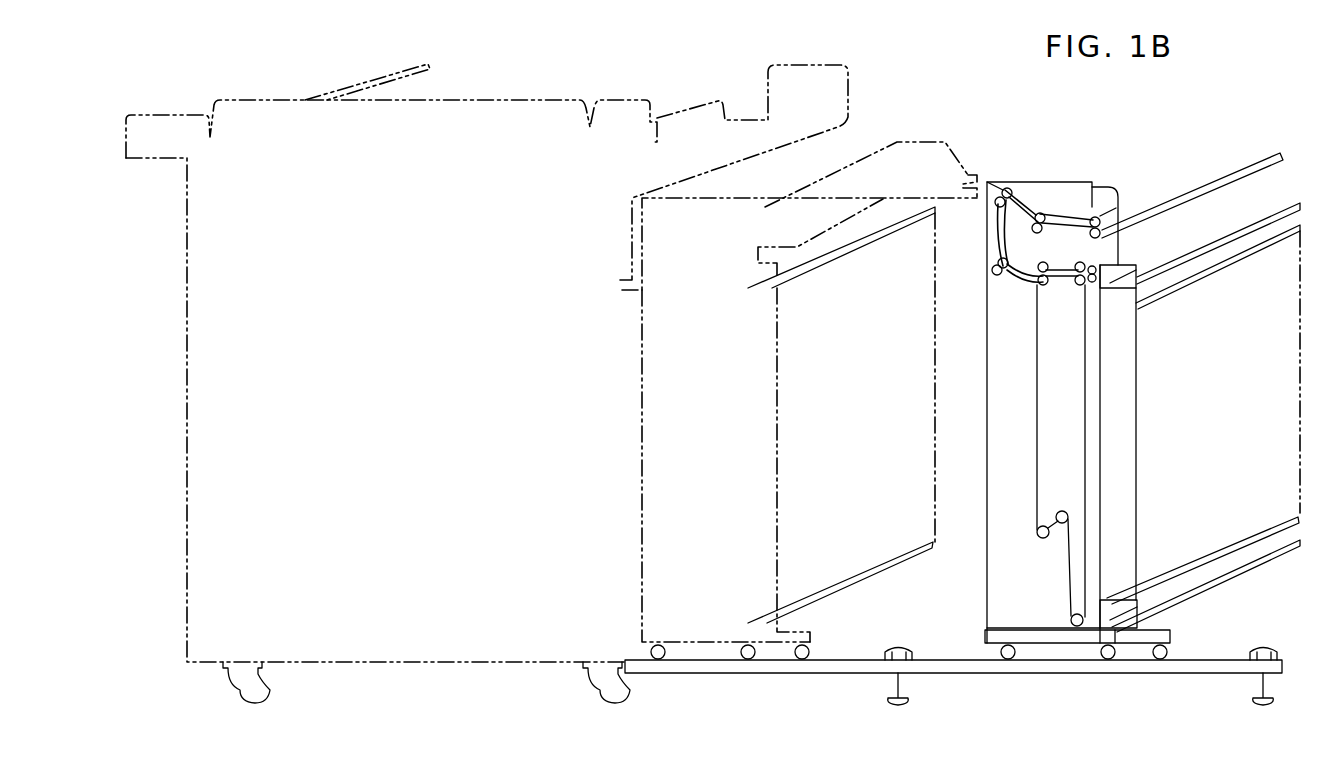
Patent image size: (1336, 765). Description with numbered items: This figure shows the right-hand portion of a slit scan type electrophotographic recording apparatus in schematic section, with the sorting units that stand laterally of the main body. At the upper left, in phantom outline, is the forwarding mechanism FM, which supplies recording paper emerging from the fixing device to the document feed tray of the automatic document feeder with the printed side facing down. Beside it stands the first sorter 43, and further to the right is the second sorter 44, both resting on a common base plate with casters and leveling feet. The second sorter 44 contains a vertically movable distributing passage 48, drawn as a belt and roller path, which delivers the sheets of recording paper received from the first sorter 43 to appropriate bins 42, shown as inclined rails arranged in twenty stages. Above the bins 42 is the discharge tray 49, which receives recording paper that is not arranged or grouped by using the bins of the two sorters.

The forwarding mechanism FM is at (882, 122).
The bins 42 is at (1273, 565).
The first sorter 43 is at (697, 623).
The second sorter 44 is at (1057, 623).
The distributing passage 48 is at (1061, 322).
The discharge tray 49 is at (1190, 192).